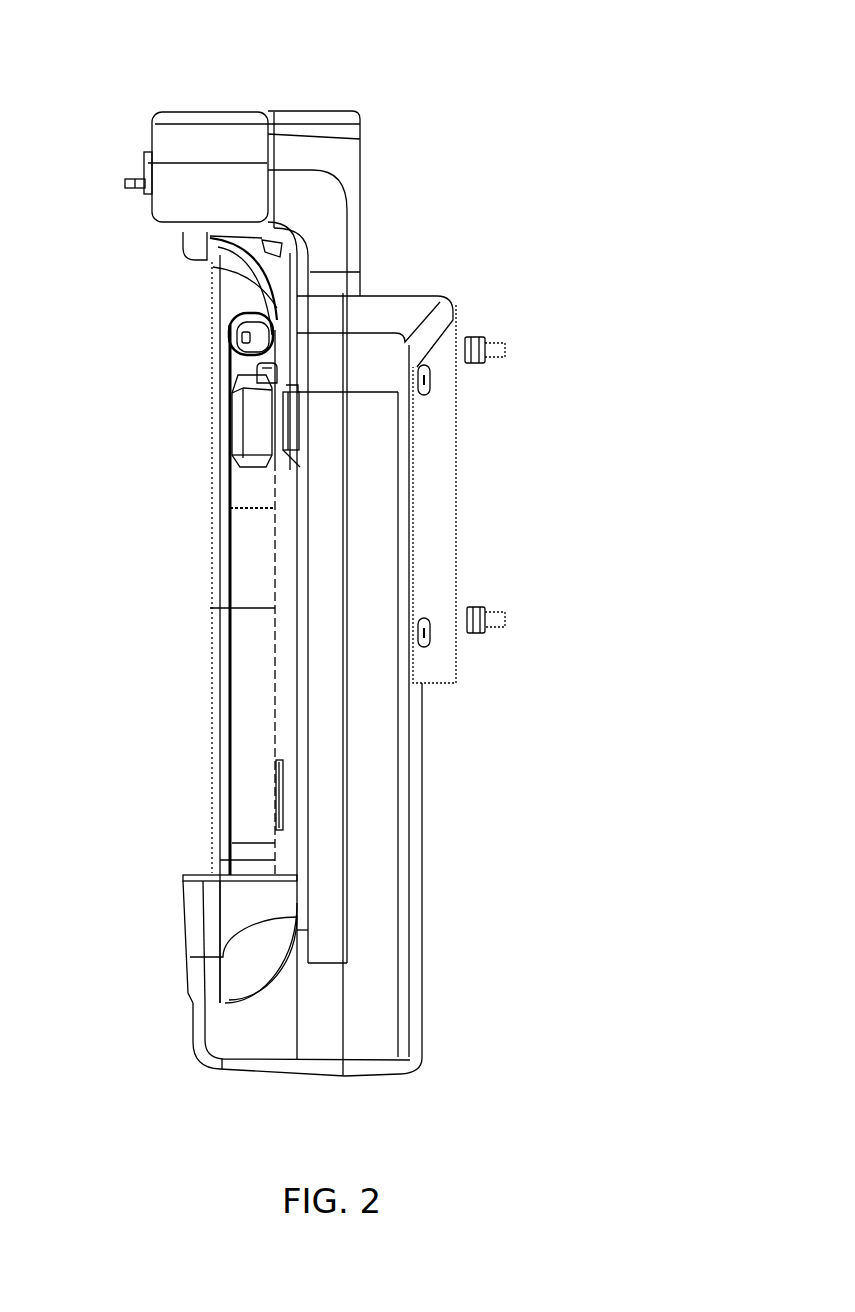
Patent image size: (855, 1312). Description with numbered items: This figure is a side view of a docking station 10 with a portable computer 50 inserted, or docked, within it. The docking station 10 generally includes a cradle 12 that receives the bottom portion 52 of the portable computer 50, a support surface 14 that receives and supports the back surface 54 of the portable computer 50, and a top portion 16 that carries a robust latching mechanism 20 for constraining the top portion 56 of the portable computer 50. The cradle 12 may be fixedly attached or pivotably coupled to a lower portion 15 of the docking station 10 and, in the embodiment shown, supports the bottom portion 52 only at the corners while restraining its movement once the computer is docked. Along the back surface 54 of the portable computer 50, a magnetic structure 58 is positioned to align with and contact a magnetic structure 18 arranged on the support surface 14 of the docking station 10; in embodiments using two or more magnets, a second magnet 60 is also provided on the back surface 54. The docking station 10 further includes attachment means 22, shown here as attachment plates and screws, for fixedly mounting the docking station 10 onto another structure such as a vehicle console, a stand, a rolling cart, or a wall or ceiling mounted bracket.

The docking station 10 is at (294, 563).
The cradle 12 is at (191, 935).
The support surface 14 is at (299, 692).
The lower portion 15 is at (242, 1071).
The top portion 16 is at (241, 106).
The magnetic structure 18 is at (292, 388).
The latching mechanism 20 is at (182, 258).
The attachment means 22 is at (440, 506).
The portable computer 50 is at (207, 610).
The bottom portion 52 is at (214, 860).
The back surface 54 is at (280, 588).
The top portion 56 is at (208, 289).
The magnetic structure 58 is at (270, 464).
The magnet 60 is at (288, 790).